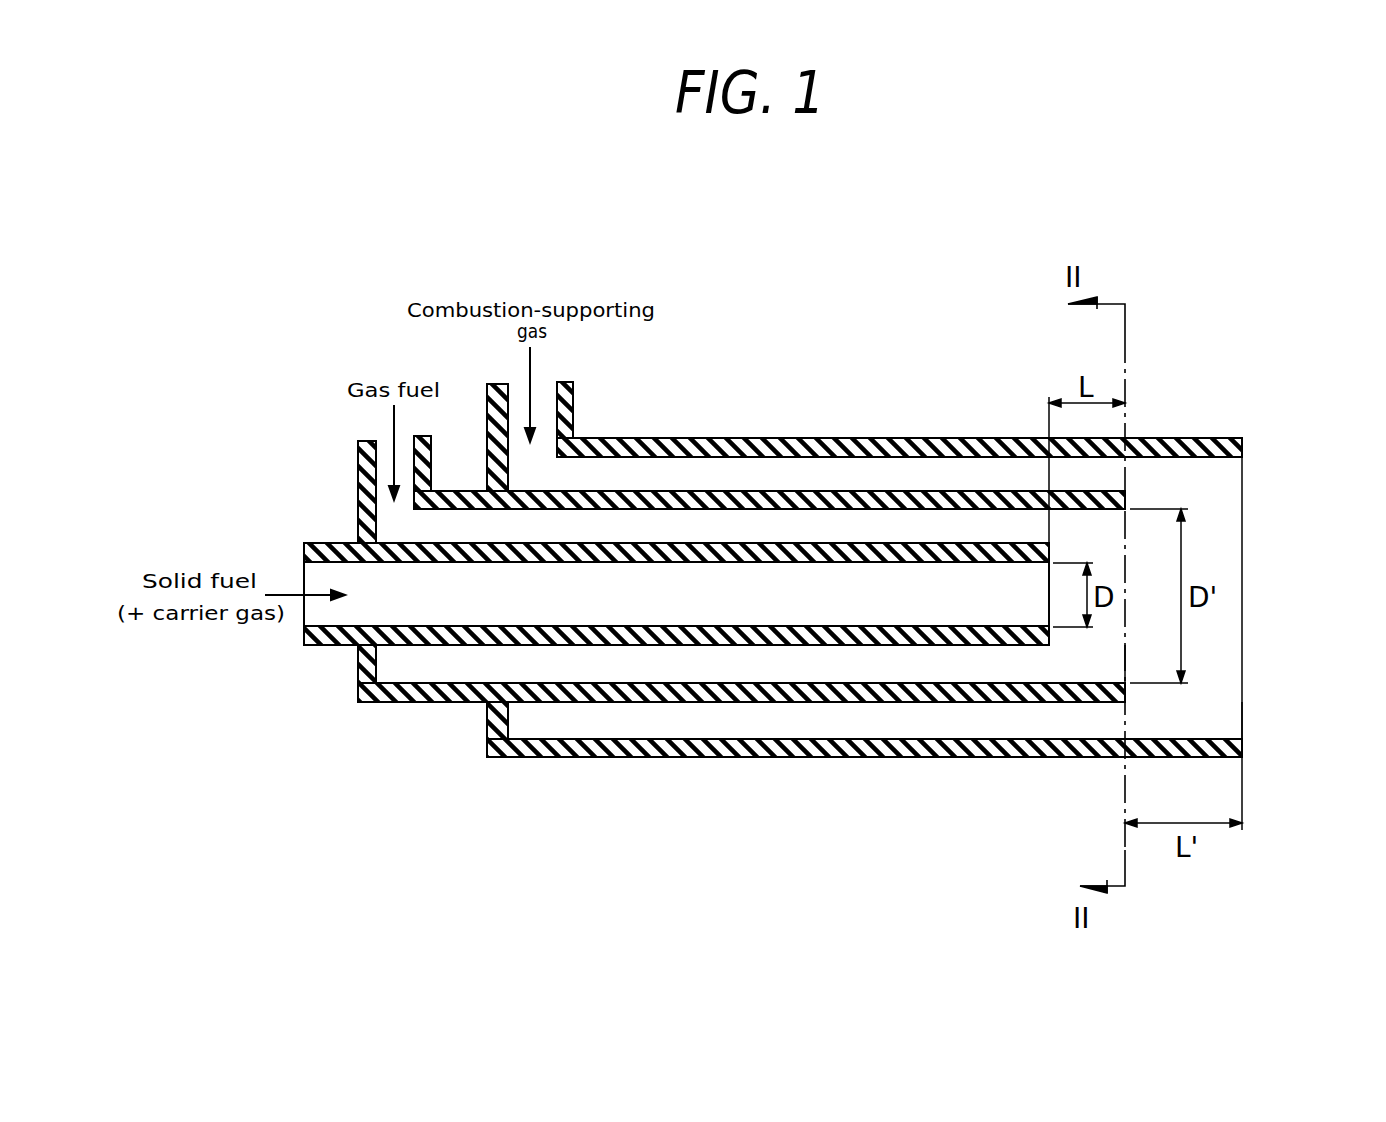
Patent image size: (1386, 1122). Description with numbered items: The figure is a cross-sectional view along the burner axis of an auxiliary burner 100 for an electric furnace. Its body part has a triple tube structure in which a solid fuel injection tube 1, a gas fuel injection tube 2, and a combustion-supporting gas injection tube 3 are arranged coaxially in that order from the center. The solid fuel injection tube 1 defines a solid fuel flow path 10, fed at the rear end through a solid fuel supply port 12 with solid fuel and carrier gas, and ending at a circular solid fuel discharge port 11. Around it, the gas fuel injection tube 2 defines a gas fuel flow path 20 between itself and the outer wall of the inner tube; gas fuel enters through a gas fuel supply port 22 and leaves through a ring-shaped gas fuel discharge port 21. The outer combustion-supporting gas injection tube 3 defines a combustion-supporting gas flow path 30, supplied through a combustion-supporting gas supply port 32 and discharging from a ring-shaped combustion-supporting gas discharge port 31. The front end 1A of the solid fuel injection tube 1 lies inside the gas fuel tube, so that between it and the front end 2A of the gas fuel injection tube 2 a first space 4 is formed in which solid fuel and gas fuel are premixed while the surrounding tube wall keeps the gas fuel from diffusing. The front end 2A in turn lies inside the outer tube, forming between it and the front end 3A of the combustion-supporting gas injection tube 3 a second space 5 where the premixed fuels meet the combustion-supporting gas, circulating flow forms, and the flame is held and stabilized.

The auxiliary burner 100 is at (1245, 252).
The solid fuel injection tube 1 is at (833, 643).
The solid fuel flow path 10 is at (937, 578).
The solid fuel discharge port 11 is at (1050, 583).
The solid fuel supply port 12 is at (310, 613).
The front end of the solid fuel injection tube 1A is at (1049, 633).
The gas fuel injection tube 2 is at (888, 700).
The gas fuel flow path 20 is at (707, 673).
The gas fuel discharge port 21 is at (1052, 660).
The gas fuel supply port 22 is at (386, 445).
The front end of the gas fuel injection tube 2A is at (1125, 498).
The combustion-supporting gas injection tube 3 is at (567, 757).
The combustion-supporting gas flow path 30 is at (728, 465).
The combustion-supporting gas discharge port 31 is at (1125, 718).
The combustion-supporting gas supply port 32 is at (543, 388).
The front end of the combustion-supporting gas injection tube 3A is at (1242, 447).
The first space 4 is at (1112, 540).
The second space 5 is at (1223, 678).